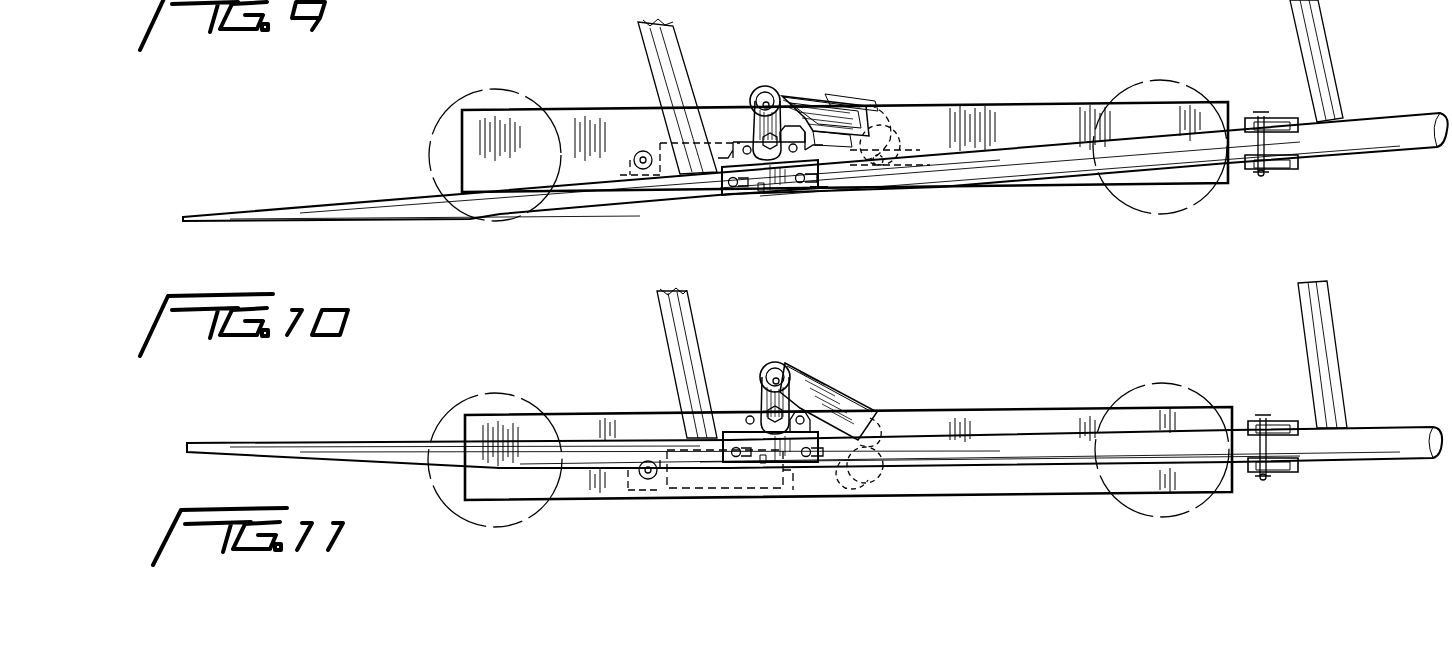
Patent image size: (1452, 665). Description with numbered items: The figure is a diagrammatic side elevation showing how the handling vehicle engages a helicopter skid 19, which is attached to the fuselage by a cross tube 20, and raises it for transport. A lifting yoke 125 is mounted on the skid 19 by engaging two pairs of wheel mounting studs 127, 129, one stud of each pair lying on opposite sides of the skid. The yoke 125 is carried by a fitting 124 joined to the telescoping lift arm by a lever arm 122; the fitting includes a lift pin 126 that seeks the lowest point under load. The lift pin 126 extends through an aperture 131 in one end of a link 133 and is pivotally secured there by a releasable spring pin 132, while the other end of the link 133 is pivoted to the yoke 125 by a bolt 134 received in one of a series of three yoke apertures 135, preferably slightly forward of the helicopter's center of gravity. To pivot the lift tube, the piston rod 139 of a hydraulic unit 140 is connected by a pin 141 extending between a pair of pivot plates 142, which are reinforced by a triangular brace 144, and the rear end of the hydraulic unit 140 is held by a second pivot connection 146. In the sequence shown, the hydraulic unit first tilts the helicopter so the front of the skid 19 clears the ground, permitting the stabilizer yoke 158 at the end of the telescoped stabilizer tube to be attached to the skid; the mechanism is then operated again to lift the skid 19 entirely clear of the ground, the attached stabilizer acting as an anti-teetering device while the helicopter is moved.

In FIG. 10, the skid 19 is at (1028, 173).
In FIG. 11, the skid 19 is at (992, 467).
In FIG. 10, the cross tube 20 is at (641, 38).
In FIG. 11, the cross tube 20 is at (657, 300).
In FIG. 10, the lever arm 122 is at (790, 96).
In FIG. 11, the lever arm 122 is at (800, 374).
In FIG. 10, the fitting 124 is at (772, 88).
In FIG. 11, the fitting 124 is at (790, 352).
In FIG. 10, the lifting yoke 125 is at (760, 195).
In FIG. 11, the lifting yoke 125 is at (773, 447).
In FIG. 10, the lift pin 126 is at (818, 100).
In FIG. 11, the lift pin 126 is at (773, 365).
In FIG. 10, the wheel mounting stud 127 is at (728, 192).
In FIG. 10, the wheel mounting stud 129 is at (815, 188).
In FIG. 11, the aperture 131 is at (835, 384).
In FIG. 11, the releasable spring pin 132 is at (762, 388).
In FIG. 10, the link 133 is at (742, 125).
In FIG. 10, the bolt 134 is at (775, 190).
In FIG. 10, the yoke aperture 135 is at (738, 142).
In FIG. 11, the piston rod 139 is at (790, 480).
In FIG. 11, the hydraulic unit 140 is at (700, 492).
In FIG. 11, the pin 141 is at (850, 478).
In FIG. 10, the pivot plate 142 is at (892, 142).
In FIG. 11, the pivot plate 142 is at (872, 485).
In FIG. 10, the triangular brace 144 is at (880, 135).
In FIG. 10, the second pivot connection 146 is at (622, 160).
In FIG. 11, the second pivot connection 146 is at (643, 492).
In FIG. 10, the yoke 158 is at (1273, 113).
In FIG. 11, the yoke 158 is at (1274, 415).